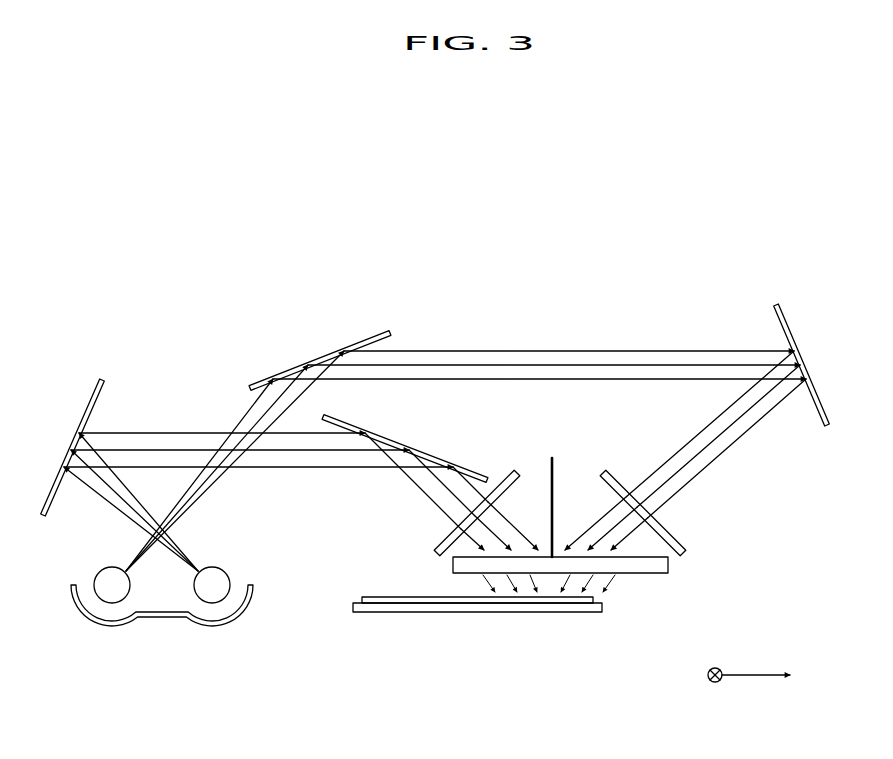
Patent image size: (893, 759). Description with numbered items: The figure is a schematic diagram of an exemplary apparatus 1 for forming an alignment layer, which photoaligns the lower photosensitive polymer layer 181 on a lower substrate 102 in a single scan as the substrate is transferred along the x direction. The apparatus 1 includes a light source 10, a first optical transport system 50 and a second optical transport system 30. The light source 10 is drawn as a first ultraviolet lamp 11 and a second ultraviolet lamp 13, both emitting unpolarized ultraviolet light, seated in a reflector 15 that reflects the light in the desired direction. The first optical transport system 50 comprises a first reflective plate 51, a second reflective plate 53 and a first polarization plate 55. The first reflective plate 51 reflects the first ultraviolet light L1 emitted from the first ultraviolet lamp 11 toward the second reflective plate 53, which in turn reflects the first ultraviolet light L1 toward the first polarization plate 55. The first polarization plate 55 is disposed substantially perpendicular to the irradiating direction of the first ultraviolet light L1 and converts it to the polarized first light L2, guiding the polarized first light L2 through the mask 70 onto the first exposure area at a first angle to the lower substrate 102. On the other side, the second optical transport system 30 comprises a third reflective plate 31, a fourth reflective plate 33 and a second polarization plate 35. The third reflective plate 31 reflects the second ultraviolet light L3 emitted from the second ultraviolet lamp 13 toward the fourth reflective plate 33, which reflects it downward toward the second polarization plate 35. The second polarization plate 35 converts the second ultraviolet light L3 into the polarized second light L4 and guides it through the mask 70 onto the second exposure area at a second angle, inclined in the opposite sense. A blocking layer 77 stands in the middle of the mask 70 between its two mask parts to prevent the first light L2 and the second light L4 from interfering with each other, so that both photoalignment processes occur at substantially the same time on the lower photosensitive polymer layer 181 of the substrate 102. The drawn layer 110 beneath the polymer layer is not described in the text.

The apparatus for forming an alignment layer 1 is at (229, 228).
The light source 10 is at (220, 683).
The first ultraviolet lamp 11 is at (112, 603).
The second ultraviolet lamp 13 is at (212, 603).
The reflector 15 is at (235, 624).
The second optical transport system 30 is at (415, 683).
The third reflective plate 31 is at (97, 403).
The fourth reflective plate 33 is at (370, 443).
The second polarization plate 35 is at (438, 549).
The first optical transport system 50 is at (708, 268).
The first reflective plate 51 is at (390, 333).
The second reflective plate 53 is at (776, 317).
The first polarization plate 55 is at (607, 477).
The mask 70 is at (668, 563).
The blocking layer 77 is at (546, 468).
The lower substrate 102 is at (597, 683).
The display panel 110 is at (526, 612).
The lower photosensitive polymer layer 181 is at (578, 603).
The first ultraviolet light L1 is at (748, 430).
The polarized first light L2 is at (622, 515).
The second ultraviolet light L3 is at (423, 490).
The polarized second light L4 is at (508, 500).